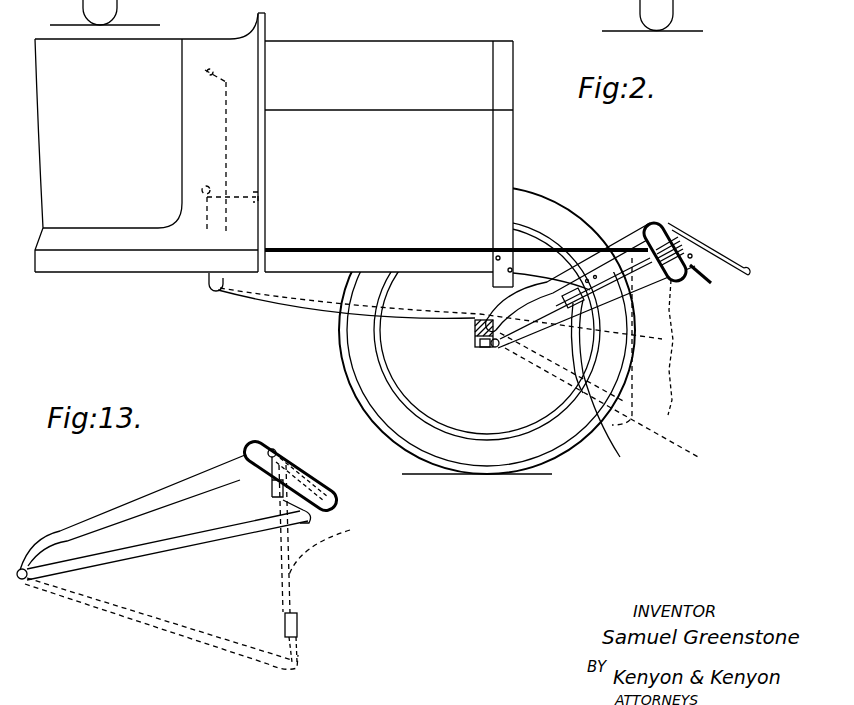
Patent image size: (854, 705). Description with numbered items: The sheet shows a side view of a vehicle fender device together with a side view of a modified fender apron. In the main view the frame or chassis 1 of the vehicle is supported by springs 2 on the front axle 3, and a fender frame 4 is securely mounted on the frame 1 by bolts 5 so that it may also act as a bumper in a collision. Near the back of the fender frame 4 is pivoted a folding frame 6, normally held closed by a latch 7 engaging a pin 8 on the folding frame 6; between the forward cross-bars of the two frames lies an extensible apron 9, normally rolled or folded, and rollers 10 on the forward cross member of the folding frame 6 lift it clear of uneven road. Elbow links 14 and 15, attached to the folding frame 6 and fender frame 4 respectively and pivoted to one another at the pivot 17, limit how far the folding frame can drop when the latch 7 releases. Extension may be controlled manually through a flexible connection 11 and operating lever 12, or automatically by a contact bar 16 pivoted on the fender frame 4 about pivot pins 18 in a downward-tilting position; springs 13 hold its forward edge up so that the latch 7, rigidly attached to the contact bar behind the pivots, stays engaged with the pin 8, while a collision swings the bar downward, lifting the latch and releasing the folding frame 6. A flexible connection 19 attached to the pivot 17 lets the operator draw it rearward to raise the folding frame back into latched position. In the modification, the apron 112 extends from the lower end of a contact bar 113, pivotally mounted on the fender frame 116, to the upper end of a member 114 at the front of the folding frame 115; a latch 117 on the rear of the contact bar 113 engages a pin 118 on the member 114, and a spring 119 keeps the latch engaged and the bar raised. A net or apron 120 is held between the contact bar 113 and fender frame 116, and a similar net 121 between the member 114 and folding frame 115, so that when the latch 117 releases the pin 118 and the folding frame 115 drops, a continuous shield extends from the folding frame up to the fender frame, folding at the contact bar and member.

In FIG. 2, the frame or chassis 1 is at (128, 264).
In FIG. 2, the springs 2 is at (627, 308).
In FIG. 2, the front axle 3 is at (474, 330).
In FIG. 2, the fender frame 4 is at (614, 248).
In FIG. 2, the bolts 5 is at (590, 282).
In FIG. 2, the folding frame 6 is at (538, 323).
In FIG. 2, the latch 7 is at (649, 239).
In FIG. 2, the pin 8 is at (672, 284).
In FIG. 2, the extensible apron 9 is at (692, 256).
In FIG. 2, the rollers 10 is at (703, 277).
In FIG. 2, the flexible connection 11 is at (553, 250).
In FIG. 2, the operating lever 12 is at (196, 71).
In FIG. 2, the springs 13 is at (671, 237).
In FIG. 2, the elbow link 14 is at (520, 322).
In FIG. 2, the elbow link 15 is at (604, 386).
In FIG. 2, the contact bar 16 is at (723, 263).
In FIG. 2, the pivot 17 is at (633, 347).
In FIG. 2, the pivot pins 18 is at (686, 246).
In FIG. 2, the flexible connection 19 is at (303, 310).
In FIG. 13, the apron 112 is at (310, 517).
In FIG. 13, the contact bar 113 is at (302, 481).
In FIG. 13, the member 114 is at (283, 507).
In FIG. 13, the folding frame 115 is at (157, 547).
In FIG. 13, the fender frame 116 is at (165, 497).
In FIG. 13, the latch 117 is at (262, 485).
In FIG. 13, the pin 118 is at (301, 468).
In FIG. 13, the spring 119 is at (280, 457).
In FIG. 13, the net or apron 120 is at (333, 491).
In FIG. 13, the net 121 is at (302, 653).